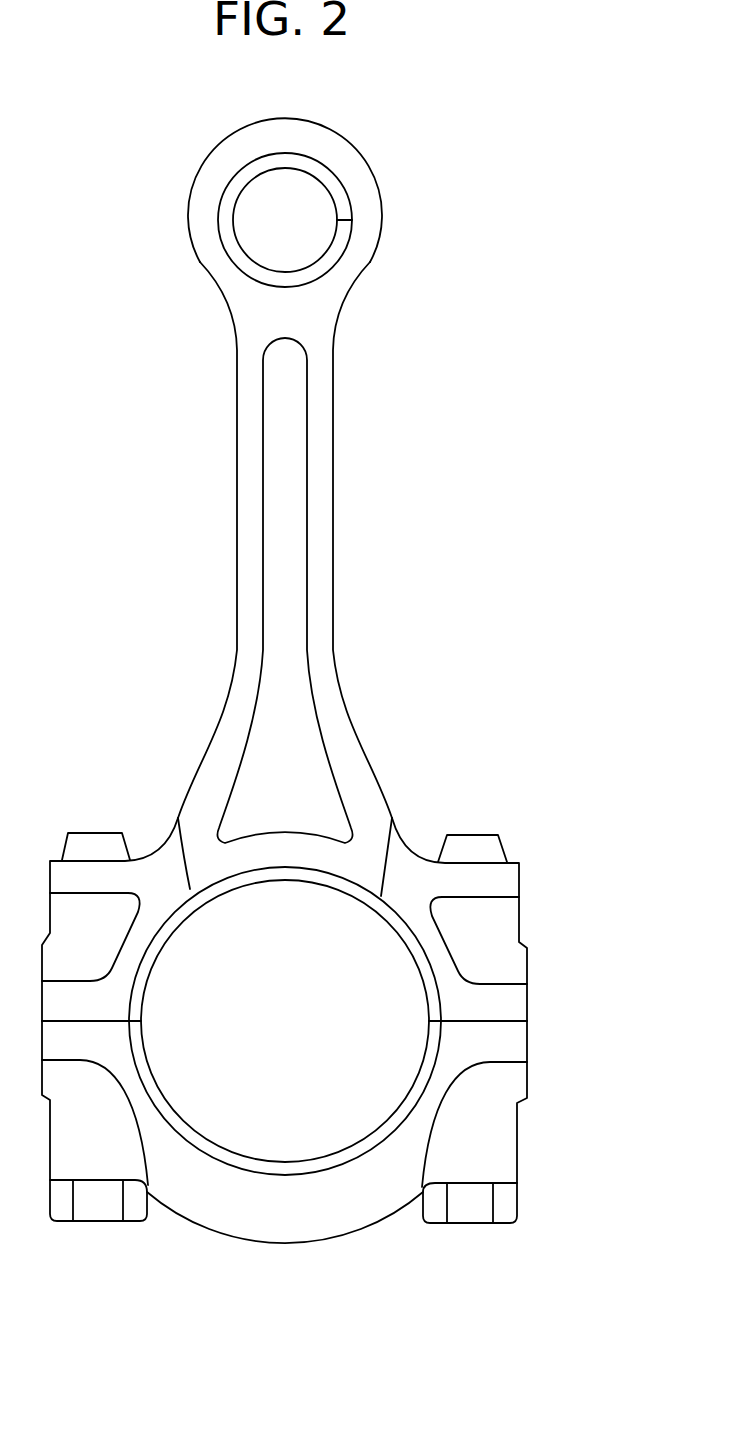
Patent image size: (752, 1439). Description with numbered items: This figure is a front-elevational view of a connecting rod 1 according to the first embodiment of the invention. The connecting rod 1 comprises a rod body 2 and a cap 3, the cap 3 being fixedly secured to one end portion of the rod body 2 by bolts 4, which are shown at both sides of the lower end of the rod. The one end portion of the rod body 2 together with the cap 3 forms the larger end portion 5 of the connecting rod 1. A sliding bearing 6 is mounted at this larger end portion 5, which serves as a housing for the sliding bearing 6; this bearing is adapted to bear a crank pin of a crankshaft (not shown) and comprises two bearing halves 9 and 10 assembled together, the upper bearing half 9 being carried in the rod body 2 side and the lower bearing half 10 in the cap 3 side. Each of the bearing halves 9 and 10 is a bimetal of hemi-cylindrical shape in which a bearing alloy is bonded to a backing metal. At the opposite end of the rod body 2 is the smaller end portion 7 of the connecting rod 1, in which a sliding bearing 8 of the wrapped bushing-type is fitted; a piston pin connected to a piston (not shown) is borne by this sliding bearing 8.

The connecting rod 1 is at (580, 622).
The rod body 2 is at (350, 730).
The cap 3 is at (357, 1230).
The bolts 4 is at (97, 1221).
The larger end portion 5 is at (552, 968).
The sliding bearing 6 is at (389, 826).
The smaller end portion 7 is at (392, 153).
The sliding bearing 8 is at (255, 160).
The bearing half 9 is at (188, 878).
The bearing half 10 is at (281, 1191).